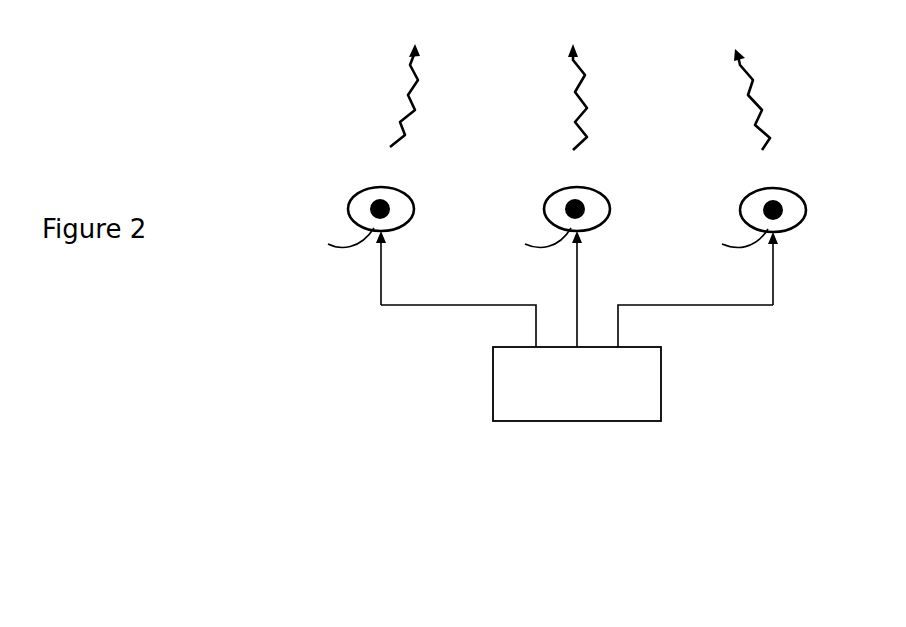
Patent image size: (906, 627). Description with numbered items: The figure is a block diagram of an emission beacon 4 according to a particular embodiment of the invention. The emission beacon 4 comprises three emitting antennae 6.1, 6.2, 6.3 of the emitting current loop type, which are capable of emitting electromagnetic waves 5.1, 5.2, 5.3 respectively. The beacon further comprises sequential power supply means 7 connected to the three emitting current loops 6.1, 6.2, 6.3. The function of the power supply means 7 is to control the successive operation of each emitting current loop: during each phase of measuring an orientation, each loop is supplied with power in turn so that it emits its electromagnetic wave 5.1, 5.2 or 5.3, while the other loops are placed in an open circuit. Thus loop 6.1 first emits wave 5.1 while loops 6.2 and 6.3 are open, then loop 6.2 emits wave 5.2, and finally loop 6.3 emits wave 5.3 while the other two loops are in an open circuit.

The emission beacon 4 is at (367, 414).
The electromagnetic wave 5.1 is at (410, 67).
The electromagnetic wave 5.2 is at (570, 97).
The electromagnetic wave 5.3 is at (738, 63).
The emitting antenna 6.1 is at (360, 202).
The emitting antenna 6.2 is at (556, 203).
The emitting antenna 6.3 is at (753, 203).
The sequential power supply means 7 is at (638, 404).